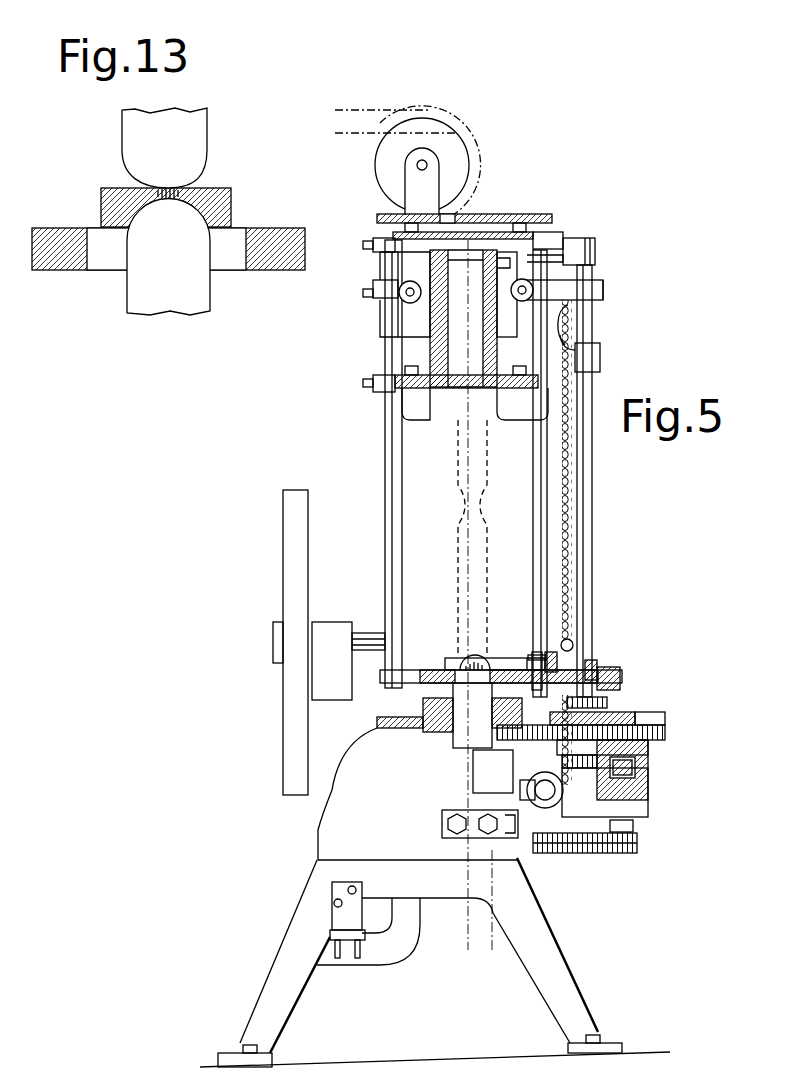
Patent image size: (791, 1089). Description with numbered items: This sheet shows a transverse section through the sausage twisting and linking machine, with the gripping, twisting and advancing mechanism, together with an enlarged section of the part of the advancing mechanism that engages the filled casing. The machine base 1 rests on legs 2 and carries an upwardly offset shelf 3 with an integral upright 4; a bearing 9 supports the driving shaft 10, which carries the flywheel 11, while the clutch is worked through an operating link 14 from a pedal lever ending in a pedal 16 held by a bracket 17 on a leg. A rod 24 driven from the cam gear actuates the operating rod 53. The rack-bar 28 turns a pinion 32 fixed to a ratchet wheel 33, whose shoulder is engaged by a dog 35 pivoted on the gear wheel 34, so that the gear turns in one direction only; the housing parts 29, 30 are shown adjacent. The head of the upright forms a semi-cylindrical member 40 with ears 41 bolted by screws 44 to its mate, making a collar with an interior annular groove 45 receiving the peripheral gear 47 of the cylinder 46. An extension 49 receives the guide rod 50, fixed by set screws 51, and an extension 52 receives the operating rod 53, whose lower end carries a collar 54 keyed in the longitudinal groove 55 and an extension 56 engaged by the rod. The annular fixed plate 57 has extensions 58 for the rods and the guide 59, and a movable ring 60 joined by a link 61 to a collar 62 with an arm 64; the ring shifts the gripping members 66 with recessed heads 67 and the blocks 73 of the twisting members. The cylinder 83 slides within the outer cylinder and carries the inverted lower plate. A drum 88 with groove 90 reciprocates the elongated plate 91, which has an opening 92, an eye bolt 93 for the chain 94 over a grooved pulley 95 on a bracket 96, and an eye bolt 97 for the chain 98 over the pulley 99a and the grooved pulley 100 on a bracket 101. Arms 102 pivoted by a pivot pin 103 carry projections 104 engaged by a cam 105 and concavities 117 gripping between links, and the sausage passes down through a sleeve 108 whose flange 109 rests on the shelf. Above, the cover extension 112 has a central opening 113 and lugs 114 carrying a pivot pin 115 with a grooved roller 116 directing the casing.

In FIG. 5, the machine base 1 is at (340, 862).
In FIG. 5, the legs 2 is at (546, 930).
In FIG. 5, the shelf 3 is at (378, 721).
In FIG. 5, the upright 4 is at (548, 466).
In FIG. 5, the bearing 9 is at (320, 640).
In FIG. 5, the driving shaft 10 is at (366, 640).
In FIG. 5, the flywheel 11 is at (290, 525).
In FIG. 5, the operating link 14 is at (405, 918).
In FIG. 5, the pedal 16 is at (347, 957).
In FIG. 5, the bracket 17 is at (332, 912).
In FIG. 5, the rod 24 is at (567, 703).
In FIG. 5, the rack-bar 28 is at (649, 758).
In FIG. 5, the box 29 is at (649, 789).
In FIG. 5, the bearing block 30 is at (636, 768).
In FIG. 5, the pinion 32 is at (579, 777).
In FIG. 5, the ratchet wheel 33 is at (600, 745).
In FIG. 5, the gear wheel 34 is at (666, 732).
In FIG. 5, the dog 35 is at (490, 758).
In FIG. 5, the semi-cylindrical member 40 is at (423, 322).
In FIG. 5, the ears 41 is at (396, 290).
In FIG. 5, the screws or bolts 44 is at (405, 302).
In FIG. 5, the annular groove 45 is at (465, 298).
In FIG. 5, the cylinder 46 is at (440, 305).
In FIG. 5, the peripheral gear 47 is at (498, 262).
In FIG. 5, the extension 49 is at (386, 292).
In FIG. 5, the guide rod 50 is at (392, 500).
In FIG. 5, the set screws 51 is at (363, 246).
In FIG. 5, the extension 52 is at (603, 288).
In FIG. 5, the operating rod 53 is at (592, 508).
In FIG. 5, the collar 54 is at (620, 676).
In FIG. 5, the longitudinal groove 55 is at (572, 612).
In FIG. 5, the extension 56 is at (540, 418).
In FIG. 5, the annular fixed plate 57 is at (398, 237).
In FIG. 5, the extensions 58 is at (376, 240).
In FIG. 5, the guide 59 is at (556, 320).
In FIG. 5, the movable ring 60 is at (518, 230).
In FIG. 5, the link 61 is at (555, 252).
In FIG. 5, the collar 62 is at (596, 250).
In FIG. 5, the arm 64 is at (564, 242).
In FIG. 5, the gripping members 66 is at (546, 236).
In FIG. 5, the recessed heads 67 is at (477, 238).
In FIG. 5, the blocks 73 is at (424, 216).
In FIG. 5, the cylinder 83 is at (446, 362).
In FIG. 5, the drum 88 is at (634, 826).
In FIG. 5, the groove 90 is at (638, 844).
In FIG. 13, the elongated plate 91 is at (280, 236).
In FIG. 5, the elongated plate 91 is at (406, 680).
In FIG. 13, the opening 92 is at (108, 258).
In FIG. 5, the opening 92 is at (475, 688).
In FIG. 5, the eye bolt 93 is at (547, 658).
In FIG. 5, the flexible member 94 is at (527, 790).
In FIG. 5, the grooved pulley 95 is at (560, 802).
In FIG. 5, the bracket 96 is at (556, 852).
In FIG. 5, the eye bolt 97 is at (580, 648).
In FIG. 5, the chain 98 is at (571, 562).
In FIG. 5, the grooved pulley 99a is at (572, 342).
In FIG. 5, the grooved pulley 100 is at (520, 860).
In FIG. 5, the bracket 101 is at (490, 836).
In FIG. 13, the arms 102 is at (112, 203).
In FIG. 5, the arms 102 is at (496, 660).
In FIG. 5, the pivot pin 103 is at (530, 663).
In FIG. 5, the projections 104 is at (537, 652).
In FIG. 5, the cam 105 is at (597, 668).
In FIG. 5, the sleeve 108 is at (452, 738).
In FIG. 5, the flange 109 is at (438, 716).
In FIG. 5, the extension 112 is at (533, 222).
In FIG. 5, the central opening 113 is at (466, 214).
In FIG. 5, the lugs 114 is at (432, 186).
In FIG. 5, the pivot pin 115 is at (426, 162).
In FIG. 5, the grooved roller 116 is at (402, 148).
In FIG. 13, the concavity 117 is at (138, 196).
In FIG. 5, the concavity 117 is at (466, 666).